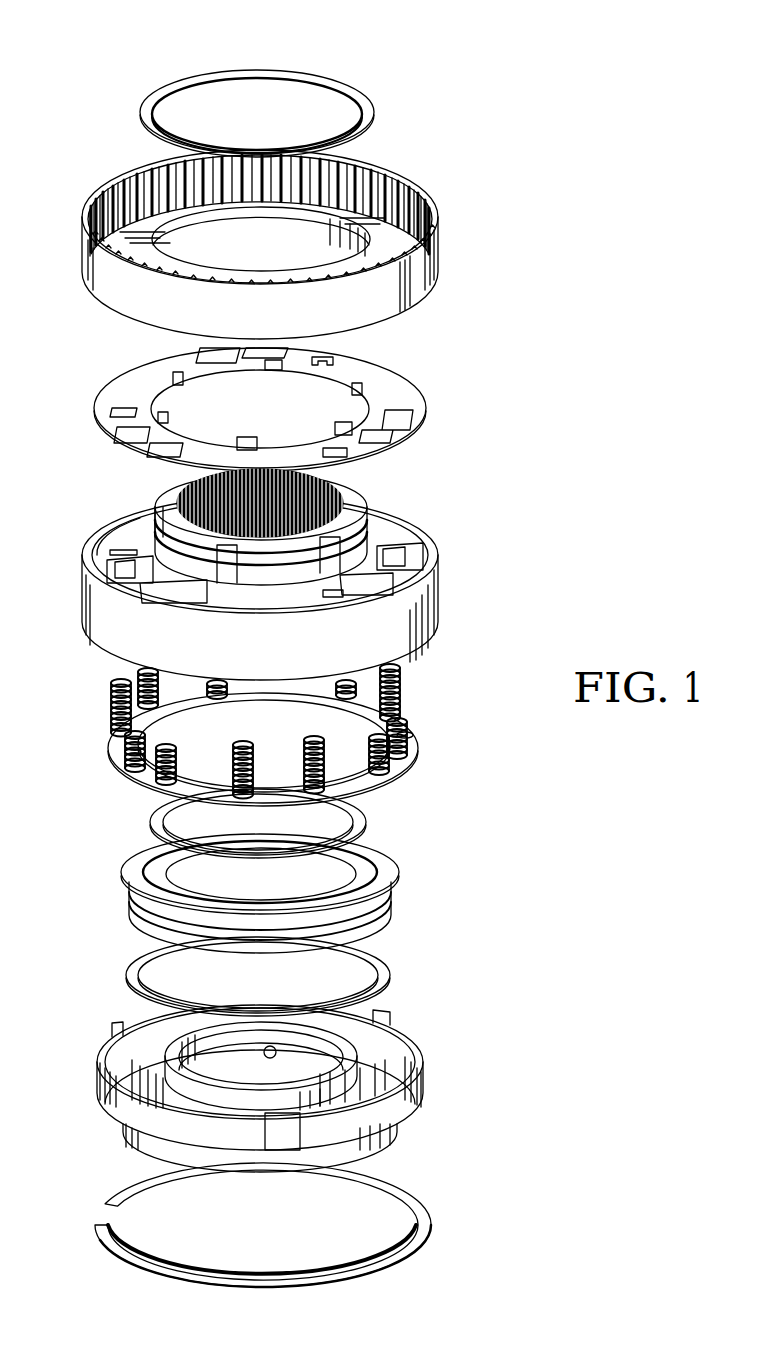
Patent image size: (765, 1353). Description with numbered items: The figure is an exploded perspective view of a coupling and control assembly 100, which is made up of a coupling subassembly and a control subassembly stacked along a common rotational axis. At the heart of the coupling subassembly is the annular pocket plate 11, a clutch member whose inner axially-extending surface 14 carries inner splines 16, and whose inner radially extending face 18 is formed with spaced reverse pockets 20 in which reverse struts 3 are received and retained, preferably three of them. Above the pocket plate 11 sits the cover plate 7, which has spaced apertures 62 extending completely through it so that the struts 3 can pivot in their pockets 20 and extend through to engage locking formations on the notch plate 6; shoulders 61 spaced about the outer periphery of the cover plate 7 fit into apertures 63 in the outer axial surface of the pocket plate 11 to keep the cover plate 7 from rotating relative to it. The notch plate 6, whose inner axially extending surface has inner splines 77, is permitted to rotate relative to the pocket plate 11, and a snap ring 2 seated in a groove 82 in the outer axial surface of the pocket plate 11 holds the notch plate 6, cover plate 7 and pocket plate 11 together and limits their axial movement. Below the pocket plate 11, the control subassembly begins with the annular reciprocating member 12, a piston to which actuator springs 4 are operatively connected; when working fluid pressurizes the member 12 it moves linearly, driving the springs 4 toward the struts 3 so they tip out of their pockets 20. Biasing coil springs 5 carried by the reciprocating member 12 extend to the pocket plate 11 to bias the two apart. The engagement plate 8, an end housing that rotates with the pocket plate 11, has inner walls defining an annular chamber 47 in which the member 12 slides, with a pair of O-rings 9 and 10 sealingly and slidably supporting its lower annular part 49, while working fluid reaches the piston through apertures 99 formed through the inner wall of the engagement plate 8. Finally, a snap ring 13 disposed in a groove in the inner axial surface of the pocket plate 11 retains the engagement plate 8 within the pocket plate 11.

The coupling and control assembly 100 is at (540, 66).
The snap ring 2 is at (378, 112).
The notch plate 6 is at (291, 242).
The inner splines 77 is at (337, 202).
The cover plate 7 is at (274, 394).
The apertures 62 is at (135, 440).
The shoulders 61 is at (352, 390).
The pocket plate 11 is at (275, 565).
The inner radially extending face 18 is at (133, 522).
The inner axially-extending surface 14 is at (187, 493).
The inner splines 16 is at (300, 500).
The groove 82 is at (281, 563).
The apertures 63 is at (327, 575).
The reverse struts 3 is at (113, 562).
The reverse pockets 20 is at (140, 588).
The annular reciprocating member 12 is at (267, 746).
The biasing coil springs 5 is at (140, 690).
The actuator springs 4 is at (133, 752).
The O-ring 9 is at (150, 813).
The lower annular part 49 is at (400, 880).
The O-ring 10 is at (130, 967).
The engagement plate 8 is at (292, 1068).
The annular chamber 47 is at (393, 1053).
The apertures 99 is at (278, 1050).
The snap ring 13 is at (430, 1220).